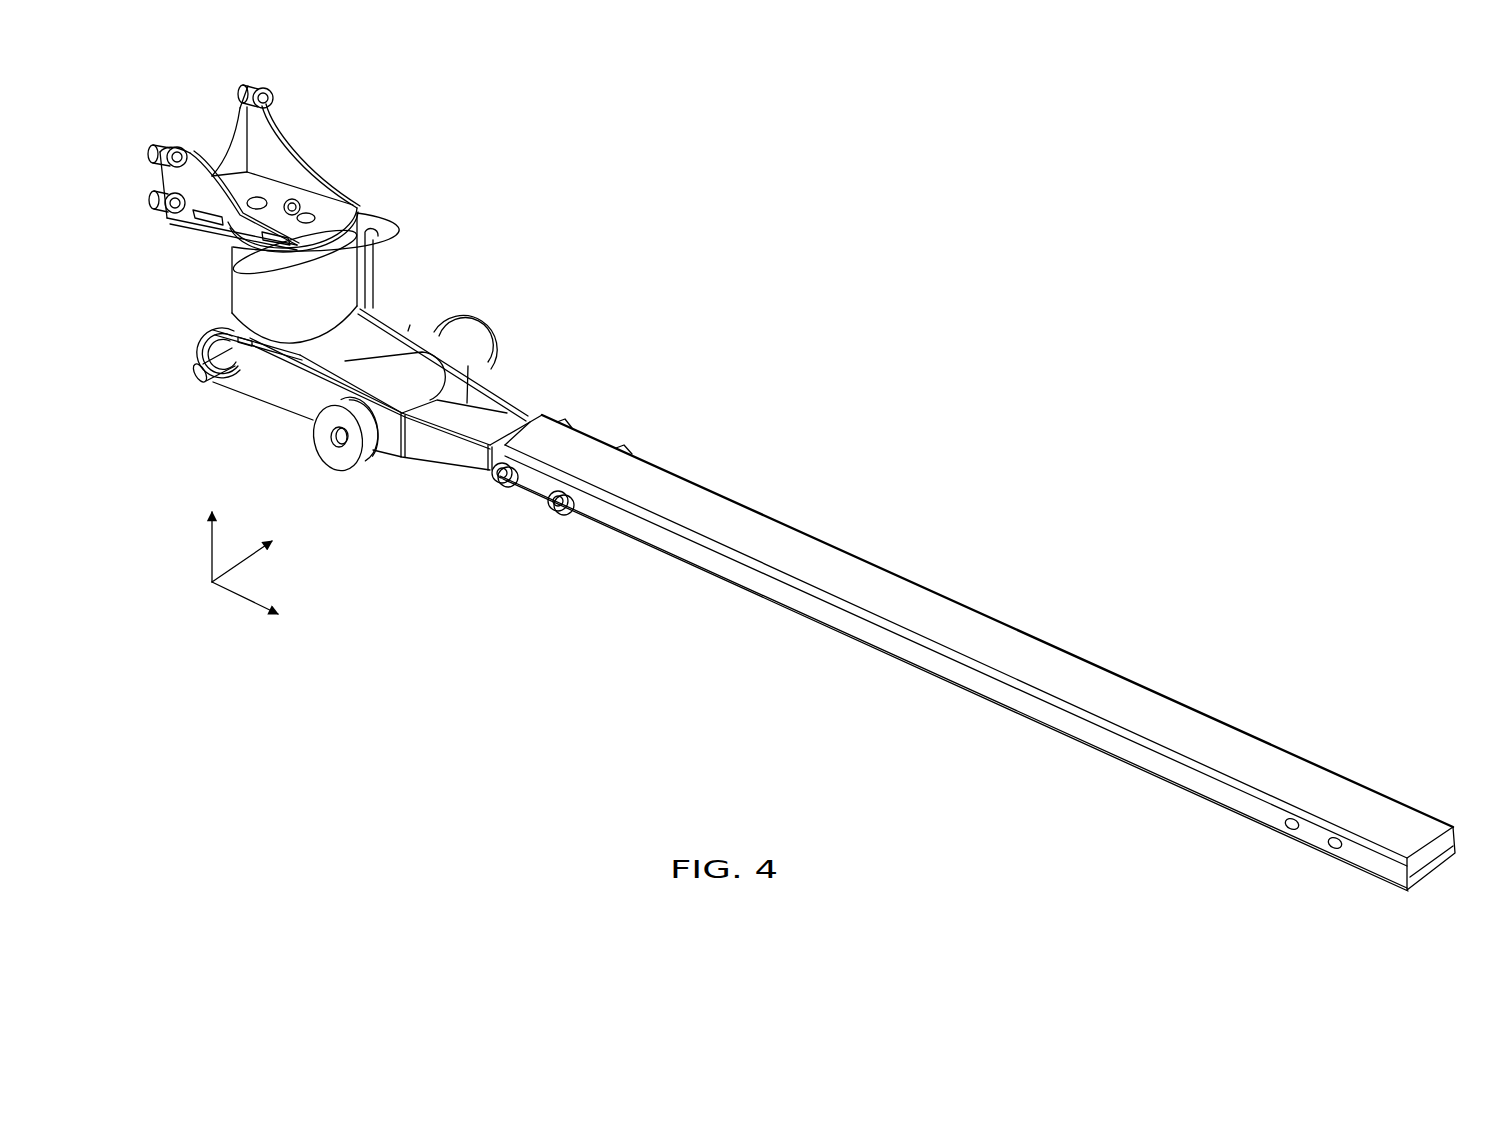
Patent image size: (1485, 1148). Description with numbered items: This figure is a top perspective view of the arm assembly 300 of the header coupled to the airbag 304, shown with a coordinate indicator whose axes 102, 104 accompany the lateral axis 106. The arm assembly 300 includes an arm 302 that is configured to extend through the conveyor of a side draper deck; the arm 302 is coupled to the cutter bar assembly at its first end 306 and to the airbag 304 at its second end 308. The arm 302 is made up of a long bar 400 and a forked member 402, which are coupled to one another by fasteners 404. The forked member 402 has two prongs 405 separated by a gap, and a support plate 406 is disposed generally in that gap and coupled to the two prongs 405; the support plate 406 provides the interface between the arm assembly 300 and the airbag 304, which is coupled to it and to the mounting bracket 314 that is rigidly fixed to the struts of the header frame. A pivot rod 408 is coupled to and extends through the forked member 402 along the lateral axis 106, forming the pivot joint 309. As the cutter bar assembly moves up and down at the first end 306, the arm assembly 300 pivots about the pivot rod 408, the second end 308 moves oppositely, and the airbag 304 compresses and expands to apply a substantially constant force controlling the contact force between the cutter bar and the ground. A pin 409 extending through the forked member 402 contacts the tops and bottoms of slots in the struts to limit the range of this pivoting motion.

The longitudinal axis 102 is at (245, 598).
The vertical axis 104 is at (212, 548).
The lateral axis 106 is at (240, 563).
The arm assembly 300 is at (977, 668).
The arm 302 is at (977, 668).
The airbag 304 is at (348, 278).
The first end 306 is at (1278, 837).
The second end 308 is at (371, 351).
The pivot joint 309 is at (500, 340).
The mounting bracket 314 is at (268, 120).
The bar 400 is at (713, 575).
The forked member 402 is at (371, 370).
The fasteners 404 is at (548, 508).
The prongs 405 is at (510, 390).
The support plate 406 is at (257, 352).
The pivot rod 408 is at (337, 468).
The pin 409 is at (197, 370).